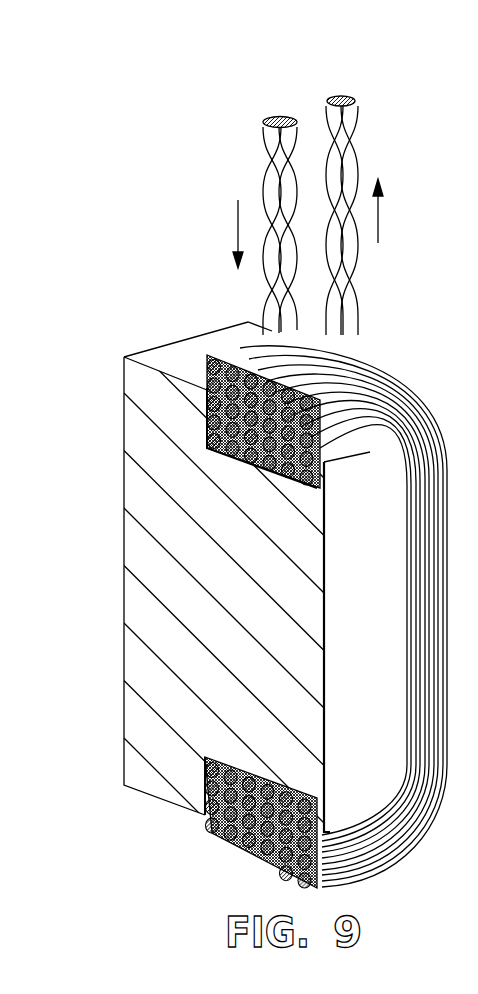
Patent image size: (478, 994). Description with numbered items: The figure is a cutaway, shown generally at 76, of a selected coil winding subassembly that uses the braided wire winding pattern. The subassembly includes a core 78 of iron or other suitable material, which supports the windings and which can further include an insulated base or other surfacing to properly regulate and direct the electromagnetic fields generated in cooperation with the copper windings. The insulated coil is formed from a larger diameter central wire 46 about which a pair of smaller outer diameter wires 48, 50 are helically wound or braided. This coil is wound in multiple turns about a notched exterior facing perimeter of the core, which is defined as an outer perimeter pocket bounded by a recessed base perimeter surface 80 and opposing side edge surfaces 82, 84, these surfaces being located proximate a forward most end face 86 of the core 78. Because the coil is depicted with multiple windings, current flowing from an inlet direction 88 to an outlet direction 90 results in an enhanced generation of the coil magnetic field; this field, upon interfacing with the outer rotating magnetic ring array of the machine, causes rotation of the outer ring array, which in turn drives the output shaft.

The central wire 46 is at (280, 116).
The smaller outer diameter wire 48 is at (264, 118).
The smaller outer diameter wire 50 is at (290, 118).
The cutaway of coil winding subassembly 76 is at (104, 452).
The core 78 is at (132, 595).
The recessed base perimeter surface 80 is at (226, 458).
The side edge surface 82 is at (216, 362).
The side edge surface 84 is at (347, 487).
The forward most end face 86 is at (378, 623).
The inlet direction 88 is at (232, 223).
The outlet direction 90 is at (380, 222).